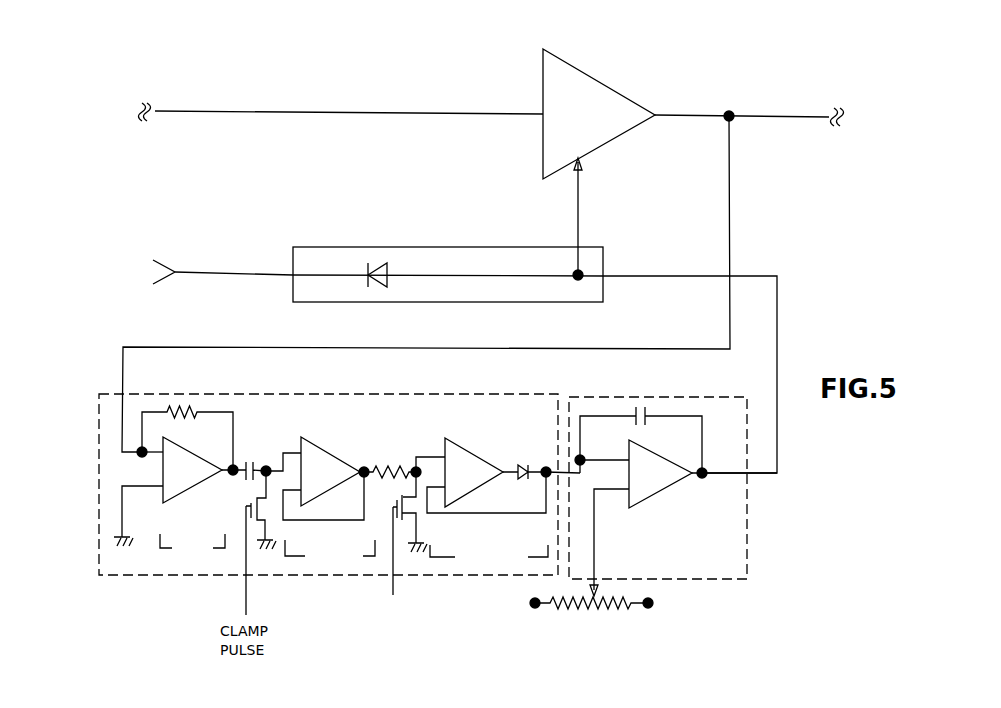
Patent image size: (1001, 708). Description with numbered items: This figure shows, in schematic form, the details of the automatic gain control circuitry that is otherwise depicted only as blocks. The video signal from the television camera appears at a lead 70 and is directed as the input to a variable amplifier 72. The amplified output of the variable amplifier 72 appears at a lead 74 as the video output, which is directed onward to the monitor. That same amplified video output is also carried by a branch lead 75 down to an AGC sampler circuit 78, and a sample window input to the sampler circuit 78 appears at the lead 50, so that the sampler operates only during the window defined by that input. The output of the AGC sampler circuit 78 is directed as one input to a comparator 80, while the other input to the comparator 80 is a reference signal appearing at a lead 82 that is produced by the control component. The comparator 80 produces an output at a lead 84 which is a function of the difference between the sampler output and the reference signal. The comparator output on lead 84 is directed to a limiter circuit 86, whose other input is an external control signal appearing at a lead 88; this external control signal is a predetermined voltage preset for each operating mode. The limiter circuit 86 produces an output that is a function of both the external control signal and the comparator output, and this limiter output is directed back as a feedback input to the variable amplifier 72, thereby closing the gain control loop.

The lead 70 is at (263, 112).
The variable amplifier 72 is at (597, 128).
The lead 74 is at (778, 117).
The feedback line 75 is at (730, 248).
The lead 88 is at (257, 273).
The limiter circuit 86 is at (409, 285).
The lead 84 is at (778, 324).
The AGC sampler circuit 78 is at (122, 560).
The lead 50 is at (395, 581).
The lead 82 is at (594, 528).
The comparator 80 is at (700, 525).